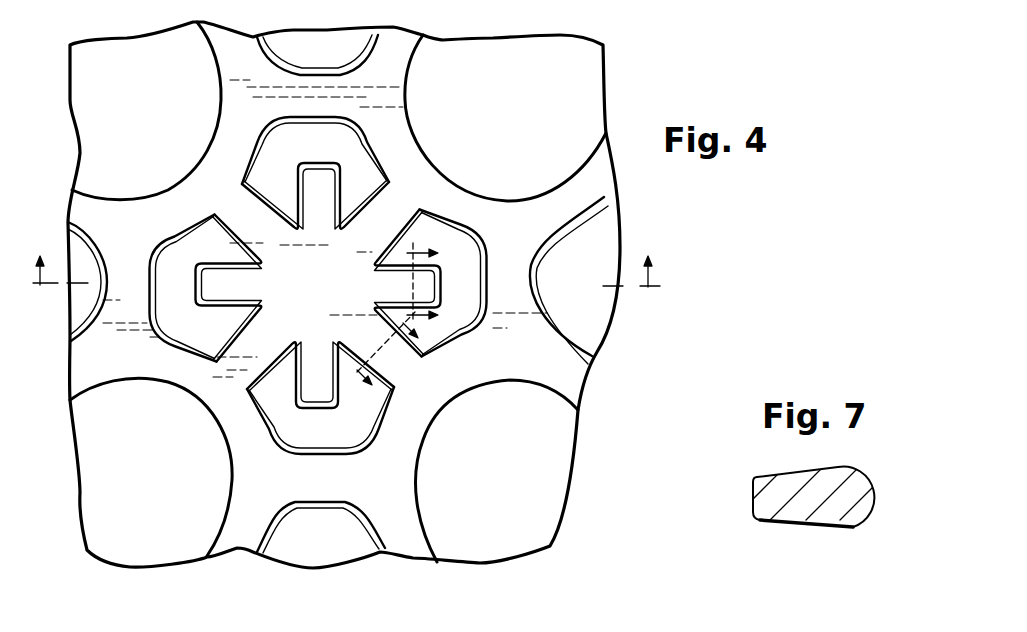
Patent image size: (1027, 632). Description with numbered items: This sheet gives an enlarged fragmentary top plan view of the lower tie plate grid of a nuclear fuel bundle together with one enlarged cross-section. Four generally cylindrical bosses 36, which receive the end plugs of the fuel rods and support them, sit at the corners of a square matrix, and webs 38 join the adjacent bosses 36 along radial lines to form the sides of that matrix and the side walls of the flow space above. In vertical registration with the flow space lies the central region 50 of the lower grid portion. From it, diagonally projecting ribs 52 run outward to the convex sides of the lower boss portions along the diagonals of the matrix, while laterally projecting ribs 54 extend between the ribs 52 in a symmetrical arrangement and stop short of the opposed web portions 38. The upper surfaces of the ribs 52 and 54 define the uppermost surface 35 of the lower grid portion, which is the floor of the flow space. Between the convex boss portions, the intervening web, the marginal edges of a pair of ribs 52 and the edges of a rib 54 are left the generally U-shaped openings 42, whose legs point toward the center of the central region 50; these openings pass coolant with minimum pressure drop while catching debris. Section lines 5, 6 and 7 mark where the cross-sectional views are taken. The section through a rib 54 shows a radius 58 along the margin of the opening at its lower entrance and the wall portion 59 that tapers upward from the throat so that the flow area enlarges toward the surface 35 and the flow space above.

In FIG. 4, the upper surface of the lower grid portion 35 is at (321, 271).
In FIG. 4, the cylindrical boss 36 is at (423, 173).
In FIG. 4, the web 38 is at (117, 300).
In FIG. 4, the opening 42 is at (338, 440).
In FIG. 4, the central region 50 is at (312, 310).
In FIG. 4, the diagonally projecting rib 52 is at (395, 210).
In FIG. 4, the laterally projecting rib 54 is at (232, 277).
In FIG. 7, the laterally projecting rib 54 is at (812, 505).
In FIG. 7, the radius 58 is at (864, 523).
In FIG. 7, the wall portion 59 is at (773, 522).
In FIG. 4, the section line 5- 5 is at (346, 258).
In FIG. 4, the section line 6- 6 is at (395, 360).
In FIG. 4, the section line 7- 7 is at (430, 285).